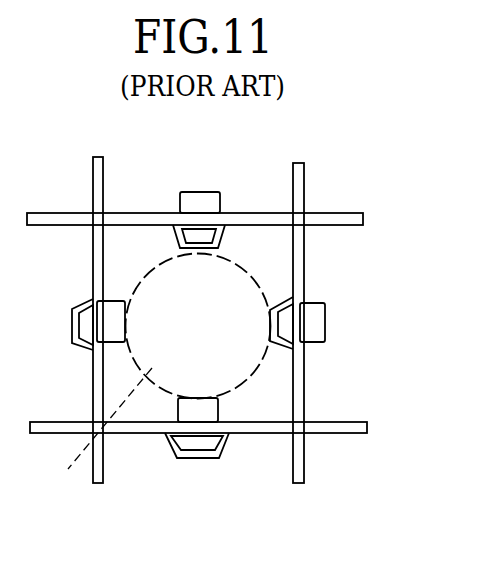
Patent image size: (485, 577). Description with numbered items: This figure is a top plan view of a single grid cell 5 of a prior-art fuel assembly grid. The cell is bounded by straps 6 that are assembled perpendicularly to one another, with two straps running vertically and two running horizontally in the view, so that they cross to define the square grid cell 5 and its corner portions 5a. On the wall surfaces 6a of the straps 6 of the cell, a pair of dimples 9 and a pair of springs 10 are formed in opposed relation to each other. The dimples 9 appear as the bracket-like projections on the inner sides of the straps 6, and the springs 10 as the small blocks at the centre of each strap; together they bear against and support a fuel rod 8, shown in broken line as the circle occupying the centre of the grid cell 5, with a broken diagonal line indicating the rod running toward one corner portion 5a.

The grid cell 5 is at (135, 410).
The corner portion 5a is at (130, 232).
The strap 6 is at (303, 242).
The wall surface 6a is at (303, 300).
The fuel rod 8 is at (99, 428).
The dimple 9 is at (225, 242).
The spring 10 is at (200, 191).